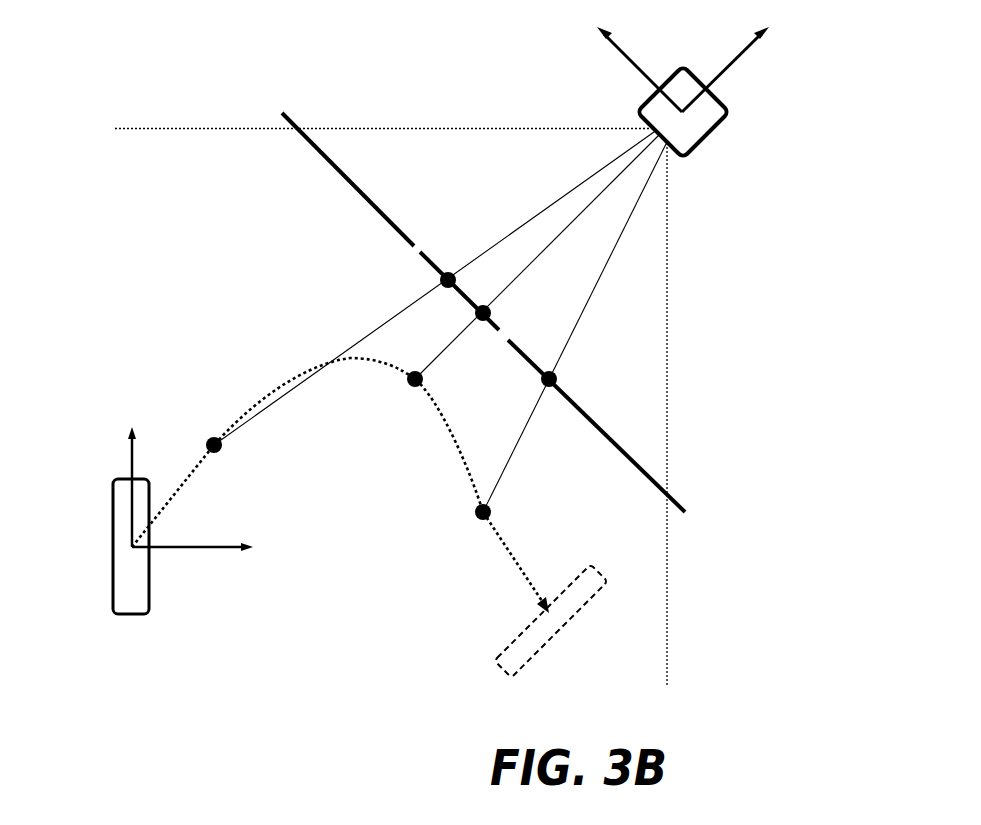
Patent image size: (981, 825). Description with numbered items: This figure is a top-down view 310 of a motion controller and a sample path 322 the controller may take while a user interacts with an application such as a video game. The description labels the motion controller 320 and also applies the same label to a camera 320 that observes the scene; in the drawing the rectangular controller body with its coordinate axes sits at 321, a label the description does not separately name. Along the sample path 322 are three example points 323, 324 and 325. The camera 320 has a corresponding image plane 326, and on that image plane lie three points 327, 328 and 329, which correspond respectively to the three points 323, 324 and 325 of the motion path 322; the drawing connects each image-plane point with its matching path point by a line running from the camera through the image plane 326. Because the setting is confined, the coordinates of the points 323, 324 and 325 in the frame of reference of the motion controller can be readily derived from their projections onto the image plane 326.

The top-down view 310 is at (356, 97).
The camera 320 is at (702, 92).
The first object position with coordinate axes 321 is at (150, 522).
The sample path 322 is at (533, 620).
The example point 323 is at (242, 465).
The example point 324 is at (388, 401).
The example point 325 is at (519, 513).
The image plane 326 is at (517, 312).
The image plane point 327 is at (453, 249).
The image plane point 328 is at (514, 317).
The image plane point 329 is at (586, 370).